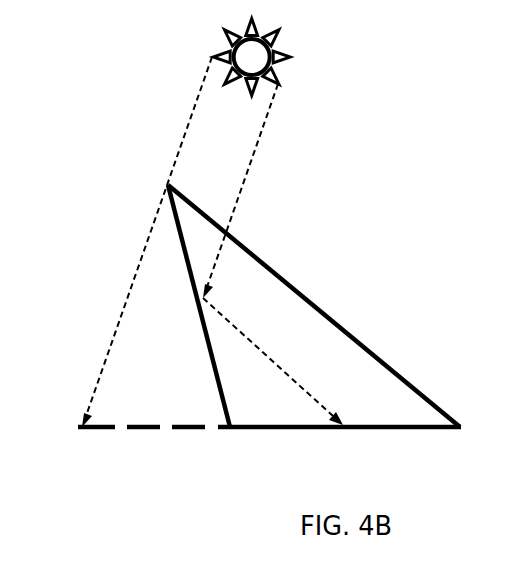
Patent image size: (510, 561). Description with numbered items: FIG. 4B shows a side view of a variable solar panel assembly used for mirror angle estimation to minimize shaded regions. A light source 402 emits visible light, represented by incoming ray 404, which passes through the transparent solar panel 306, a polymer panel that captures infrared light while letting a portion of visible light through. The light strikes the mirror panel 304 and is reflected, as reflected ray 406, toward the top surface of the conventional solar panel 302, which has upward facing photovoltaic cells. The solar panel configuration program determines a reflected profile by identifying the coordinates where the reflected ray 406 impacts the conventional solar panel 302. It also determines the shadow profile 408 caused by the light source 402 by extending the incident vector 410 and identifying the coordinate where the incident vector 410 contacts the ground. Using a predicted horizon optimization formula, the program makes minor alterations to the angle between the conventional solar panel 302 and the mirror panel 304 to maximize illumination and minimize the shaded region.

The light source 402 is at (278, 80).
The incoming ray 404 is at (252, 162).
The incident vector 410 is at (112, 337).
The reflected ray 406 is at (273, 363).
The mirror panel 304 is at (183, 247).
The transparent solar panel 306 is at (295, 287).
The conventional solar panel 302 is at (253, 429).
The shadow profile 408 is at (128, 430).